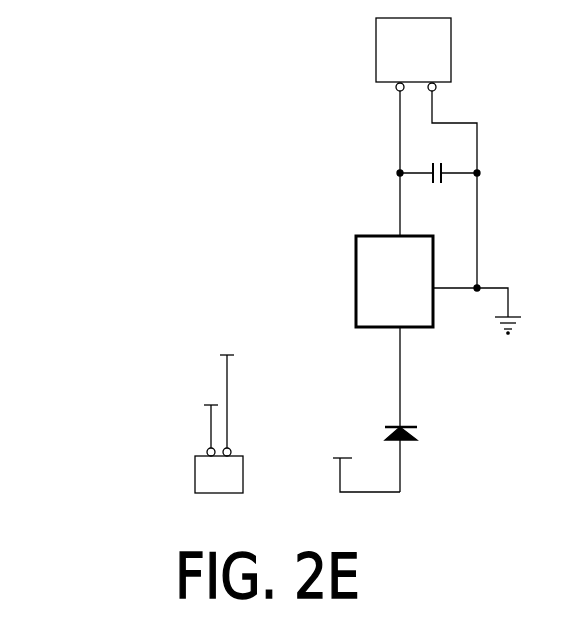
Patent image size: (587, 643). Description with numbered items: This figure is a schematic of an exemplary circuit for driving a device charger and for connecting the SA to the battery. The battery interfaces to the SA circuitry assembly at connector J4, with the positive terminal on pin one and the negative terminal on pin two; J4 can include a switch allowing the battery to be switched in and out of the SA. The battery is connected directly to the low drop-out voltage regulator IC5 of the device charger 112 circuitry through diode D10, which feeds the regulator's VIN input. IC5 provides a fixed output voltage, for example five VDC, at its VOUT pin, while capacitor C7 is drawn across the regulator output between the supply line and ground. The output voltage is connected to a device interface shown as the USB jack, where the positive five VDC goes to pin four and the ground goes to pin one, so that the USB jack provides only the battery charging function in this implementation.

The device charger 112 is at (46, 73).
The low drop-out voltage regulator IC5 is at (356, 267).
The capacitor C7 is at (438, 163).
The diode D10 is at (428, 439).
The battery interface connector J4 is at (196, 470).